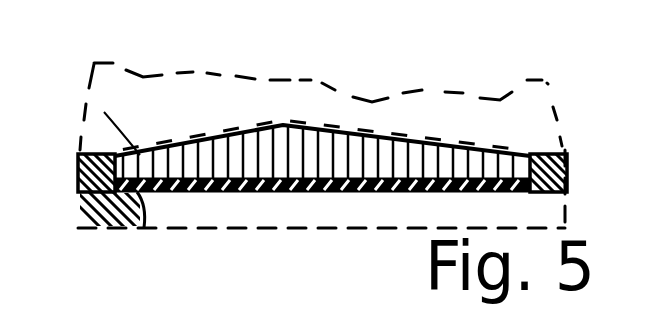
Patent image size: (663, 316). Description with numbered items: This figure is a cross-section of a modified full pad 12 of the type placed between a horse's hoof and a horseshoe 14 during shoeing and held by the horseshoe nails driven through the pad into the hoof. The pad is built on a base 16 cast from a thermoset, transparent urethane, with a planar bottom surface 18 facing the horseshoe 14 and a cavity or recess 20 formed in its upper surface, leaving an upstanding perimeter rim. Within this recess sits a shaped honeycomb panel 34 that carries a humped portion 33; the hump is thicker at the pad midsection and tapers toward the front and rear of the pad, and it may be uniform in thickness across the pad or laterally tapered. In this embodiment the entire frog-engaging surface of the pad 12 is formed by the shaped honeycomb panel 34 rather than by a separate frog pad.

The full pad 12 is at (75, 192).
The horseshoe 14 is at (102, 222).
The base 16 is at (202, 193).
The planar bottom surface 18 is at (141, 226).
The cavity or recess 20 is at (339, 178).
The humped portion 33 is at (256, 122).
The honeycomb panel 34 is at (106, 114).